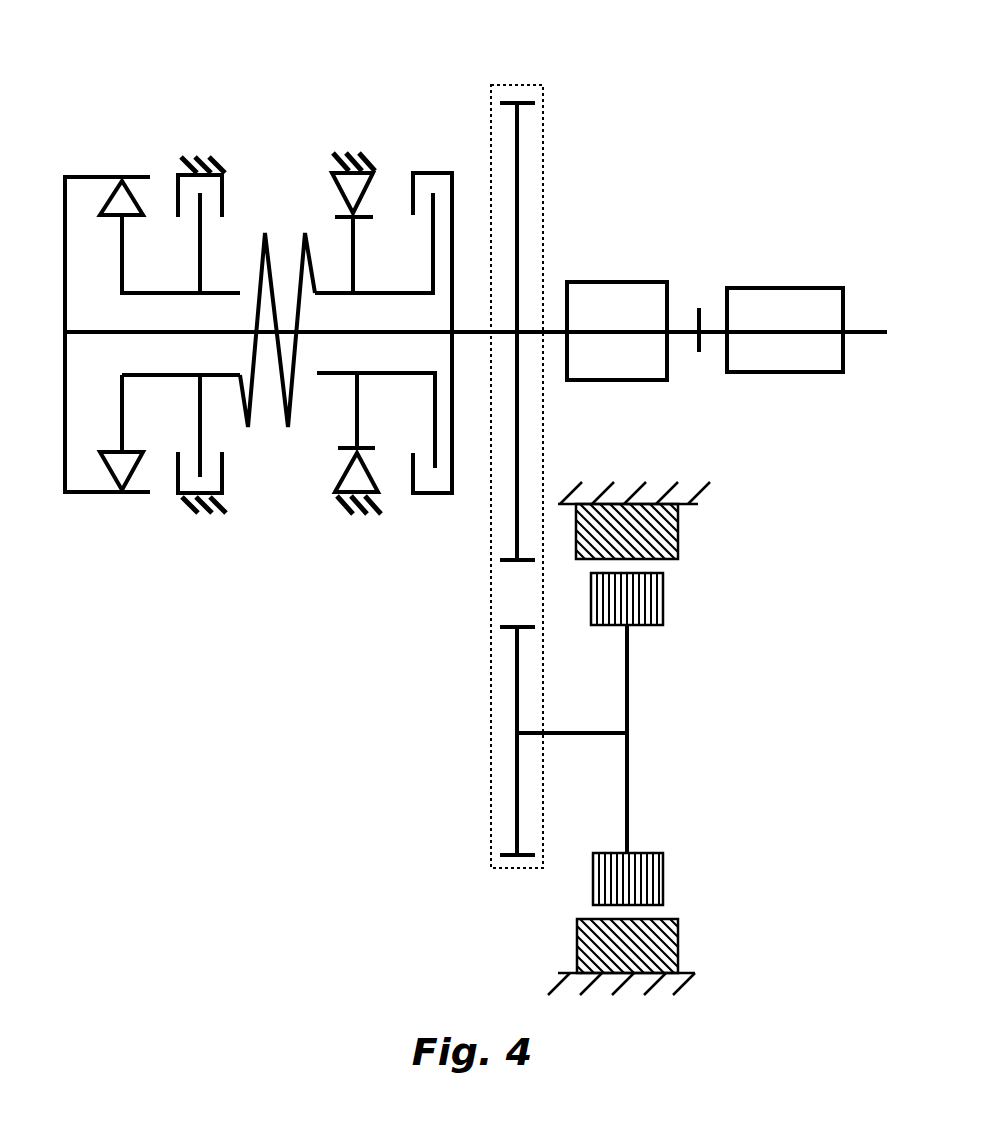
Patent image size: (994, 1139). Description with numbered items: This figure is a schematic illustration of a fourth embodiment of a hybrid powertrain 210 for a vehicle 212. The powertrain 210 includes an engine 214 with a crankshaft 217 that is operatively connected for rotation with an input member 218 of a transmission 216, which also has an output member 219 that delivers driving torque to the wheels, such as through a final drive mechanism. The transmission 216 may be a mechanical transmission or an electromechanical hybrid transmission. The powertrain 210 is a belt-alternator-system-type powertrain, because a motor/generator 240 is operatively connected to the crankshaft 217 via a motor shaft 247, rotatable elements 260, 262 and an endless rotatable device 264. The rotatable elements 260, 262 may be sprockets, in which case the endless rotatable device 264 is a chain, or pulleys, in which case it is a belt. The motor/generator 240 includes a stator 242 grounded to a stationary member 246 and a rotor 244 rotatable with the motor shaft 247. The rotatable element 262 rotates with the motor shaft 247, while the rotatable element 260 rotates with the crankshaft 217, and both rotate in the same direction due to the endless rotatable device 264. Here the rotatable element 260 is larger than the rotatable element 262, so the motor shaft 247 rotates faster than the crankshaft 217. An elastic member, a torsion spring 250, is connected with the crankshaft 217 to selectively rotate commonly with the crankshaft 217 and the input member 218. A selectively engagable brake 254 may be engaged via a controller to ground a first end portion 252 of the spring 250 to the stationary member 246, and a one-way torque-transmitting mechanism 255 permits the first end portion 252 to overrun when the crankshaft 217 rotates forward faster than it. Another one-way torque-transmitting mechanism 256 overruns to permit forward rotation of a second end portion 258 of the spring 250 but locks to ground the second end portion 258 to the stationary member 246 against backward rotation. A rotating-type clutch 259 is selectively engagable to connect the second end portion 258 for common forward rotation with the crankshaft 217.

The hybrid powertrain 210 is at (593, 64).
The vehicle 212 is at (705, 63).
The engine 214 is at (617, 331).
The transmission 216 is at (785, 330).
The crankshaft 217 is at (556, 328).
The input member 218 is at (717, 337).
The output member 219 is at (865, 335).
The motor/generator 240 is at (688, 702).
The stator 242 is at (679, 535).
The rotor 244 is at (665, 877).
The stationary member 246 is at (194, 518).
The motor shaft 247 is at (582, 737).
The torsion spring 250 is at (282, 456).
The first end portion 252 is at (215, 378).
The selectively engagable brake 254 is at (225, 230).
The one-way torque-transmitting mechanism 255 is at (101, 480).
The one-way torque-transmitting mechanism 256 is at (318, 500).
The second end portion 258 is at (333, 288).
The rotating-type clutch 259 is at (408, 238).
The rotatable element 260 is at (519, 128).
The rotatable element 262 is at (512, 698).
The endless rotatable device 264 is at (489, 760).